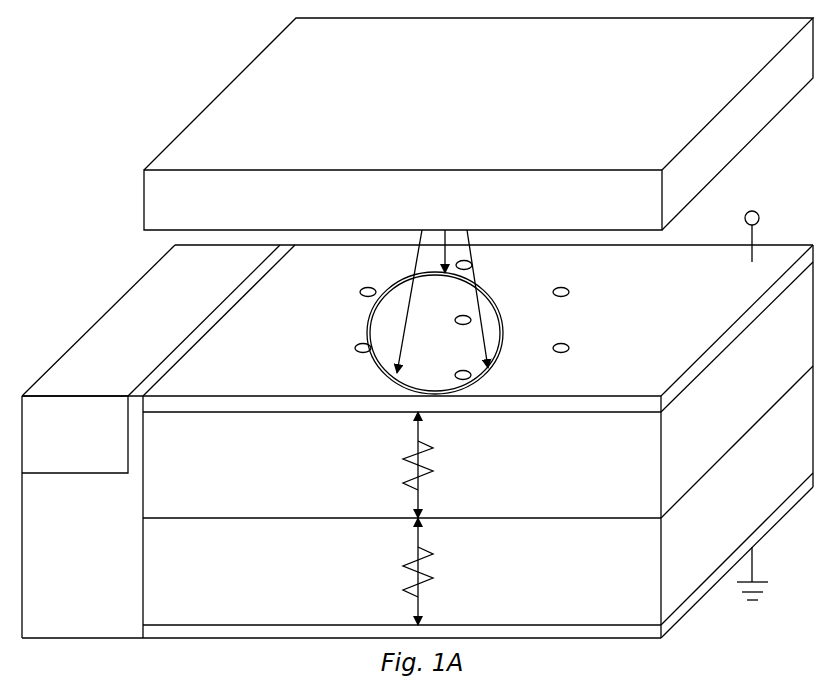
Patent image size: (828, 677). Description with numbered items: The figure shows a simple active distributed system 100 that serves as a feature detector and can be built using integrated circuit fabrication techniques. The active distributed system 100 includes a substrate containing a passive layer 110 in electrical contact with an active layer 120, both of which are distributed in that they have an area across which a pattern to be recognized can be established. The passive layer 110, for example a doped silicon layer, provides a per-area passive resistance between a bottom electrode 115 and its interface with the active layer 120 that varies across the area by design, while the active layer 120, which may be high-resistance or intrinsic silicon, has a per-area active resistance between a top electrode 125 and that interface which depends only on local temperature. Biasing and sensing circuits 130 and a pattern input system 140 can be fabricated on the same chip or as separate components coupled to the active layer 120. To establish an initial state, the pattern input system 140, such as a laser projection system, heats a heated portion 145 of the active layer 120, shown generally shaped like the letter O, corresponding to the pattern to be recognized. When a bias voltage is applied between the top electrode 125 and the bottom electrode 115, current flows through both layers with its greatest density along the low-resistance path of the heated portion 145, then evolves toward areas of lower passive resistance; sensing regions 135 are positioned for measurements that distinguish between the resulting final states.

The active distributed system 100 is at (214, 29).
The passive layer 110 is at (168, 583).
The bottom electrode 115 is at (545, 624).
The active layer 120 is at (168, 476).
The top electrode 125 is at (650, 352).
The biasing and sensing circuits 130 is at (93, 365).
The sensing regions 135 is at (367, 292).
The pattern input system 140 is at (497, 209).
The heated portion 145 is at (388, 370).